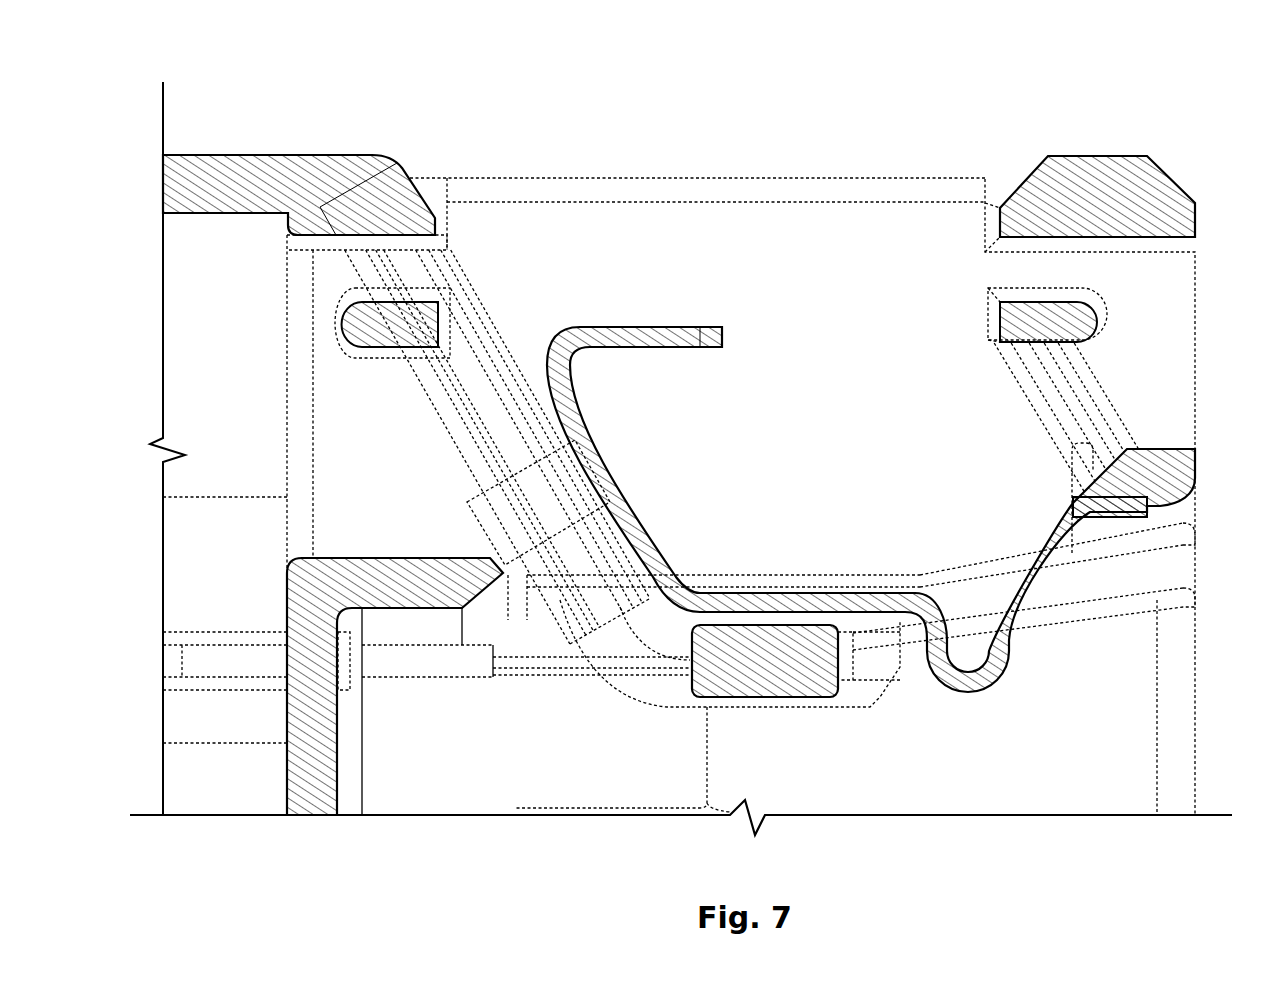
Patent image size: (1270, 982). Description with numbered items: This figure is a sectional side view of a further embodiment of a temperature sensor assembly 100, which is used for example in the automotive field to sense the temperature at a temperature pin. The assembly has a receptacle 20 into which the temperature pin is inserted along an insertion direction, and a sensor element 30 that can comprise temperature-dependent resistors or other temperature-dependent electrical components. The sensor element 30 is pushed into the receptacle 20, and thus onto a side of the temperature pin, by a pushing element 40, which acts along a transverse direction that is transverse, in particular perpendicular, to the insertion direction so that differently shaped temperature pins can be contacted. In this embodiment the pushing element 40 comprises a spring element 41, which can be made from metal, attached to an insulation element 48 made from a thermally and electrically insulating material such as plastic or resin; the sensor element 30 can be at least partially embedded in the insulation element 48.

The temperature sensor assembly 100 is at (199, 72).
The receptacle 20 is at (914, 823).
The sensor element 30 is at (611, 742).
The pushing element 40 is at (668, 326).
The spring element 41 is at (712, 327).
The insulation element 48 is at (510, 375).